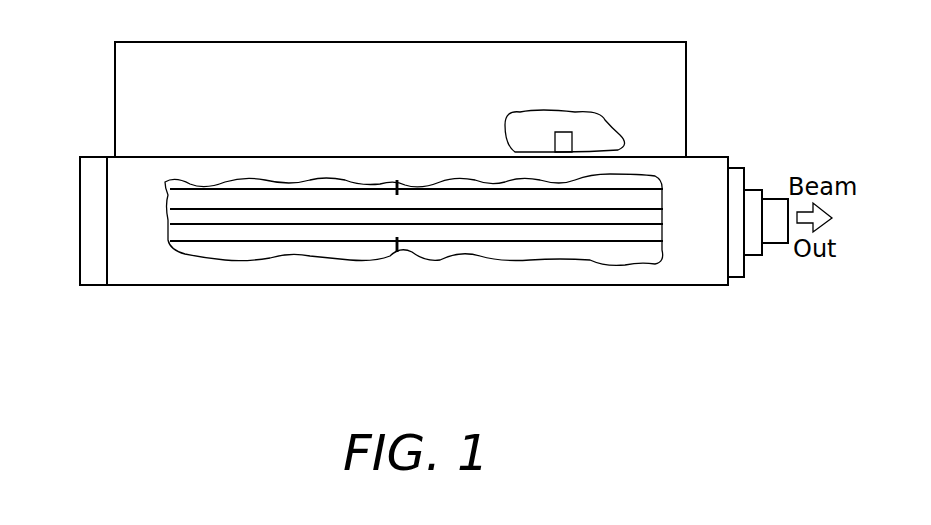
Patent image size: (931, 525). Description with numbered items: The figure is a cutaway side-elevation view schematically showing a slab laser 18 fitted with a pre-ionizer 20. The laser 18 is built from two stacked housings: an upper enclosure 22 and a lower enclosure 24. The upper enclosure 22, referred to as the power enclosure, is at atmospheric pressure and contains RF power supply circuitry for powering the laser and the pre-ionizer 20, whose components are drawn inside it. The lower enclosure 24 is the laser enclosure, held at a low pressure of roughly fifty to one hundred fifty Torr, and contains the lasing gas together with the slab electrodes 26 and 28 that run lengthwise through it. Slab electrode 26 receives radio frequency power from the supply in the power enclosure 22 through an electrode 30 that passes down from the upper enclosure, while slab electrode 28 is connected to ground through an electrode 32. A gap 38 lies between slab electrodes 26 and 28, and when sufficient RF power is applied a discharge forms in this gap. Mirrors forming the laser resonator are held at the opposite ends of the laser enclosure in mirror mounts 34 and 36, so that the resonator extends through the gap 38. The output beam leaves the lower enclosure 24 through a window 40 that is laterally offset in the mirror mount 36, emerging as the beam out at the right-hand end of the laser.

The slab laser 18 is at (330, 349).
The pre-ionizer 20 is at (572, 143).
The upper enclosure 22 is at (116, 95).
The lower enclosure 24 is at (152, 279).
The slab electrode 26 is at (243, 198).
The slab electrode 28 is at (315, 233).
The electrode 30 is at (390, 180).
The electrode 32 is at (398, 250).
The mirror mount 34 is at (94, 175).
The mirror mount 36 is at (755, 262).
The gap 38 is at (285, 216).
The window 40 is at (773, 202).